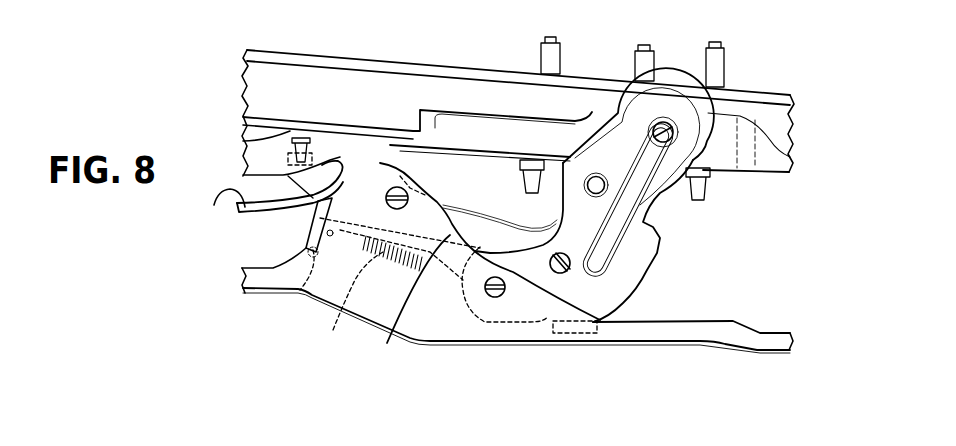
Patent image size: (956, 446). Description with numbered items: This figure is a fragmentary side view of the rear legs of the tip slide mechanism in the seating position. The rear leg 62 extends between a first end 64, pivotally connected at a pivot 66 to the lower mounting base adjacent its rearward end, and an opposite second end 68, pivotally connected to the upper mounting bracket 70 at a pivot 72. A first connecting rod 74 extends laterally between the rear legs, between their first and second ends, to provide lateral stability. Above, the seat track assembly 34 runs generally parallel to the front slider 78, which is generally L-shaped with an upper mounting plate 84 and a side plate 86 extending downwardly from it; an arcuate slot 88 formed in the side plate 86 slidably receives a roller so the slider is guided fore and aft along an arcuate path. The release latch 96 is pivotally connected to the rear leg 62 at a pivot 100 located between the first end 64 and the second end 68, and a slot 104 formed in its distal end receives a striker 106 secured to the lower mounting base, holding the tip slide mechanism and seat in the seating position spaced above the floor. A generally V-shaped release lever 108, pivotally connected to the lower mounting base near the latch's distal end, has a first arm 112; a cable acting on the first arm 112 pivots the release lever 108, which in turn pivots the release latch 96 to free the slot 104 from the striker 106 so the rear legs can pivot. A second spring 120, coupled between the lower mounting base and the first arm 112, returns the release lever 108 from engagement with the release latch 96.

The seat track assembly 34 is at (300, 77).
The upper mounting plate 84 is at (247, 132).
The side plate 86 is at (353, 145).
The front slider 78 is at (233, 168).
The arcuate slot 88 is at (214, 205).
The release lever 108 is at (313, 232).
The first arm 112 is at (293, 294).
The first end 64 is at (470, 335).
The second spring 120 is at (397, 281).
The release latch 96 is at (411, 301).
The pivot 66 is at (497, 297).
The pivot 100 is at (566, 272).
The rear leg 62 is at (630, 270).
The second end 68 is at (670, 82).
The pivot 72 is at (668, 130).
The first connecting rod 74 is at (605, 185).
The upper mounting bracket 70 is at (772, 156).
The slot 104 is at (312, 158).
The striker 106 is at (408, 208).